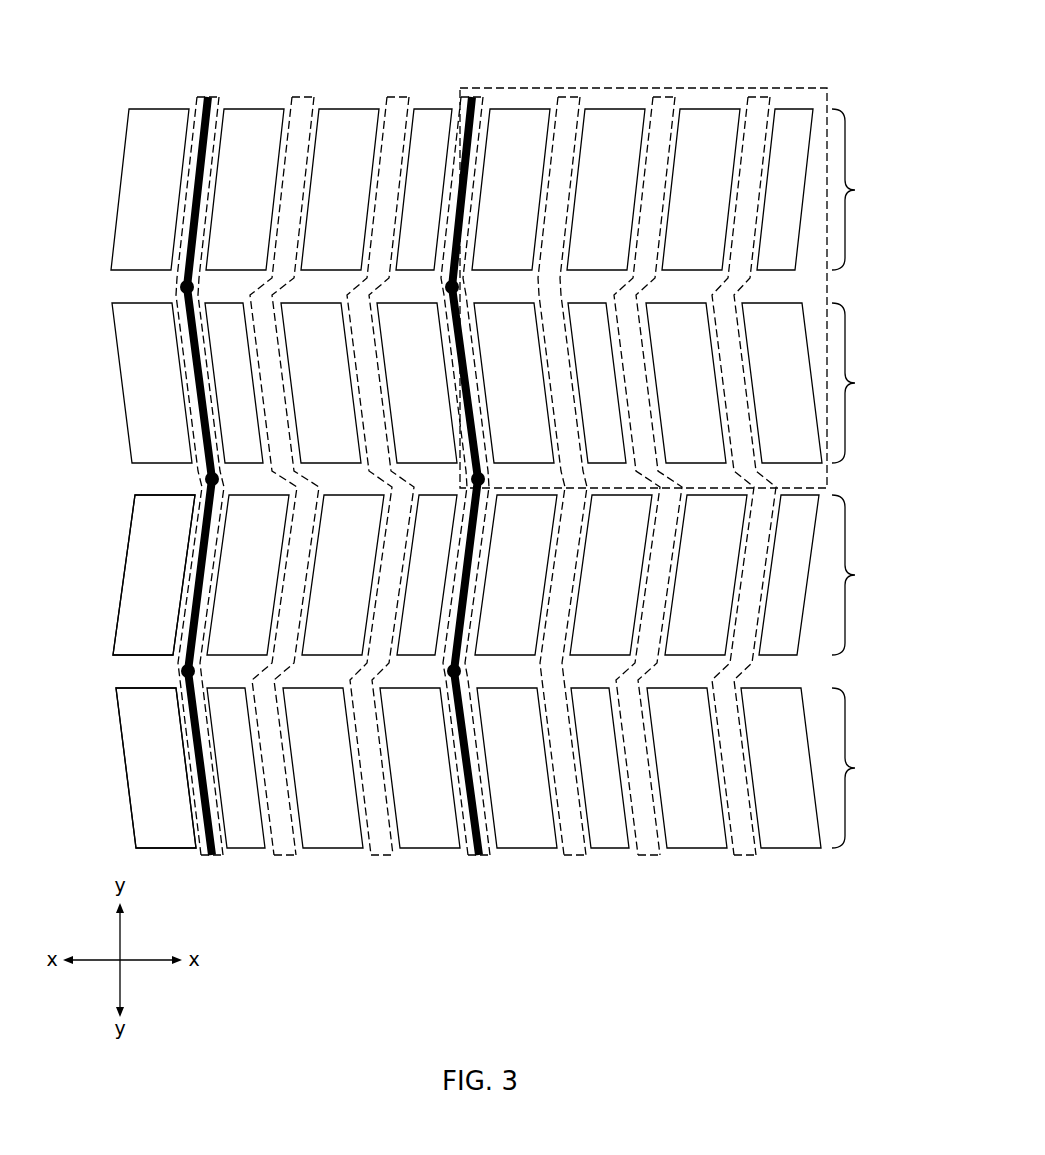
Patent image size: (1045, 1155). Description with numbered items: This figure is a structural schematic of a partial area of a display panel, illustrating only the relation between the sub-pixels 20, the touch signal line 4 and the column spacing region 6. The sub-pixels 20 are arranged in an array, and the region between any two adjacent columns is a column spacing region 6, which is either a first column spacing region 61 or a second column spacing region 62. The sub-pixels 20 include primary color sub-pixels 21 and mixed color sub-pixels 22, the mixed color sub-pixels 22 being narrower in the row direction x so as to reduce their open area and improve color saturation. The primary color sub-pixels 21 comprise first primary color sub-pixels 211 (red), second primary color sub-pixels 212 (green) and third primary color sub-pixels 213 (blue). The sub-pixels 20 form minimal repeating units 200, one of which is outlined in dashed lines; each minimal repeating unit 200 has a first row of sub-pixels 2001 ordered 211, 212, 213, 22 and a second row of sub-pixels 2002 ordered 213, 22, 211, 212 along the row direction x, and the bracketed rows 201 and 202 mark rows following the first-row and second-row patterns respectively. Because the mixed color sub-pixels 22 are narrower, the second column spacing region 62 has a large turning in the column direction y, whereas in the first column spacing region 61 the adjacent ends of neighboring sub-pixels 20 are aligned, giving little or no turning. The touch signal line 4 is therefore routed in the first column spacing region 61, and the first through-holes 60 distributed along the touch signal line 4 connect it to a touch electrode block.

The touch signal line 4 is at (214, 106).
The column spacing region 6 is at (468, 481).
The sub-pixel 20 is at (120, 600).
The primary color sub-pixel 21 is at (466, 478).
The mixed color sub-pixel 22 is at (512, 478).
The first through-hole 60 is at (180, 289).
The first column spacing region 61 is at (594, 58).
The second column spacing region 62 is at (291, 856).
The minimal repeating unit 200 is at (728, 88).
The first pixel row 201 is at (878, 382).
The second pixel row 202 is at (878, 575).
The first primary color sub-pixel 211 is at (419, 478).
The second primary color sub-pixel 212 is at (514, 478).
The third primary color sub-pixel 213 is at (429, 478).
The first row of sub-pixels 2001 is at (878, 189).
The second row of sub-pixels 2002 is at (878, 383).